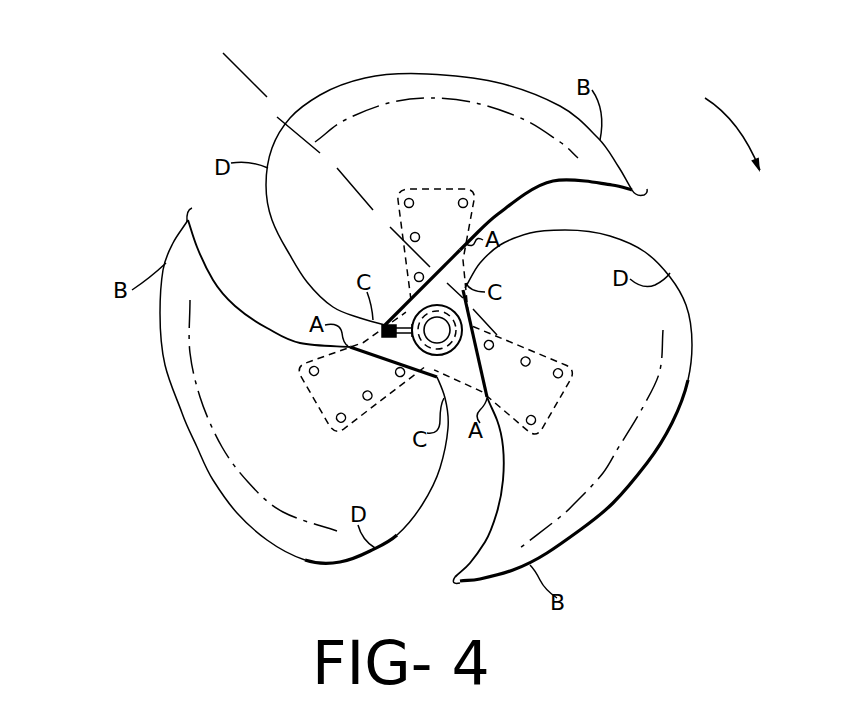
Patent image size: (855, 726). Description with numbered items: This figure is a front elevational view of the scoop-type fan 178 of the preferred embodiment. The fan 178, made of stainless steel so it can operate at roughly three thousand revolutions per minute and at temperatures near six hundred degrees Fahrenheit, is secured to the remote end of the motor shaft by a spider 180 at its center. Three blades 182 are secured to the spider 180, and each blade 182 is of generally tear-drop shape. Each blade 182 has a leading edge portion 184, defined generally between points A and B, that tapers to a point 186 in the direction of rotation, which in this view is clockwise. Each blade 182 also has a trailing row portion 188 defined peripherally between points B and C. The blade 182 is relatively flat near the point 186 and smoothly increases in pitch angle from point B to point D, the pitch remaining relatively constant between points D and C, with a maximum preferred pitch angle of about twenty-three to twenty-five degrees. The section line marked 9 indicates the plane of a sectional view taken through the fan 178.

The scoop-type fan 178 is at (636, 120).
The spider 180 is at (543, 327).
The blade 182 is at (436, 86).
The leading edge portion 184 is at (558, 182).
The point 186 is at (647, 189).
The trailing row portion 188 is at (353, 103).
The section line 9- 9 is at (235, 63).